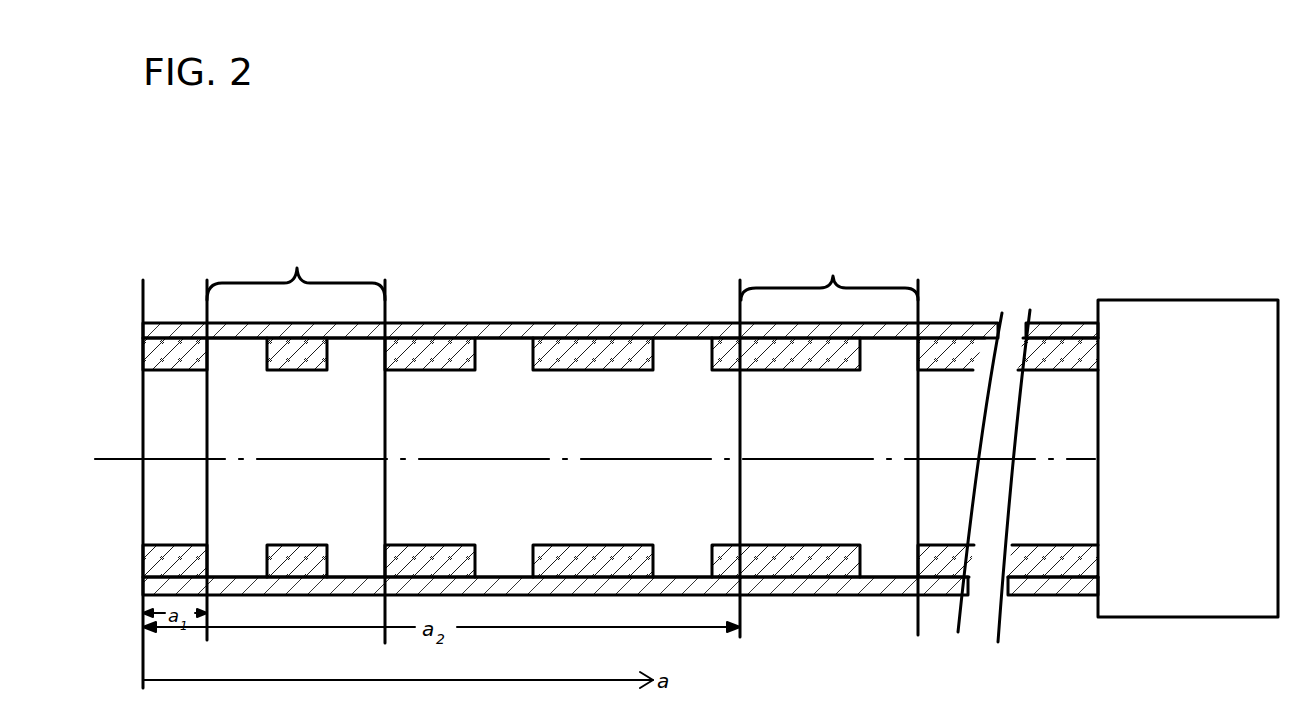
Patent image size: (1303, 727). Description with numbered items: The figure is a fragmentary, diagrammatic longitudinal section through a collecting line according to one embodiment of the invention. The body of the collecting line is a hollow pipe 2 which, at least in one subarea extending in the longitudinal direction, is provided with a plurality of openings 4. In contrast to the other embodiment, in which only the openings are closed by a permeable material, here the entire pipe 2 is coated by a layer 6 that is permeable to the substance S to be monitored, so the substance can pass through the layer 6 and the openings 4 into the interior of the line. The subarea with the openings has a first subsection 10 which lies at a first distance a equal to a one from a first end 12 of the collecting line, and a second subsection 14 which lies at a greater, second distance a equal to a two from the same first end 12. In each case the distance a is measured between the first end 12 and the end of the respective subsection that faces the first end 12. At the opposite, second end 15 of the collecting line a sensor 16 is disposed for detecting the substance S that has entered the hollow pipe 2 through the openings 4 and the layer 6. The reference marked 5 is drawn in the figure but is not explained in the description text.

The hollow pipe 2 is at (568, 353).
The openings 4 is at (357, 353).
The tube assembly 5 is at (690, 309).
The layer 6 is at (490, 343).
The first subsection 10 is at (296, 265).
The first end 12 is at (143, 417).
The second subsection 14 is at (829, 273).
The second end 15 is at (1095, 402).
The sensor 16 is at (1147, 320).